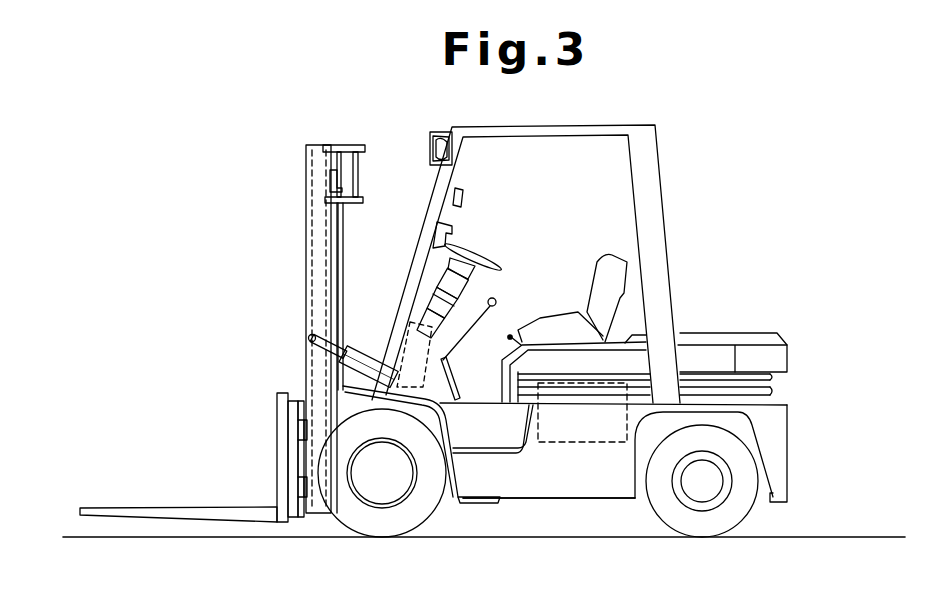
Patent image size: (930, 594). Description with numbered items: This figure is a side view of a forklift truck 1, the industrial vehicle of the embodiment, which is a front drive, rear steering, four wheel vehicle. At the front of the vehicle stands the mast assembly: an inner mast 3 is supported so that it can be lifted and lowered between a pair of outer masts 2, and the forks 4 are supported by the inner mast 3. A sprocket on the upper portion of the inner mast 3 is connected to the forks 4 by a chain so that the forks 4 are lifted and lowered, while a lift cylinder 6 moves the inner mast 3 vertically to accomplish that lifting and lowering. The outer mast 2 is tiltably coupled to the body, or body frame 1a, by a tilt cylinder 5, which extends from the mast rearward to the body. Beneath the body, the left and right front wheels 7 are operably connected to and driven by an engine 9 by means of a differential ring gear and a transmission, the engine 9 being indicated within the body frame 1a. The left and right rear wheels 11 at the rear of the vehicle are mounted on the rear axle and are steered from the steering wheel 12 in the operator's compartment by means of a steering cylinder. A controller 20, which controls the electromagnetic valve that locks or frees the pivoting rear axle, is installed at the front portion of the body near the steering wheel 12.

The forklift truck 1 is at (718, 146).
The body frame 1a is at (563, 490).
The outer mast 2 is at (305, 179).
The inner mast 3 is at (303, 145).
The forks 4 is at (150, 510).
The tilt cylinder 5 is at (373, 355).
The lift cylinder 6 is at (343, 218).
The front wheels 7 is at (424, 507).
The engine 9 is at (607, 443).
The rear wheels 11 is at (738, 517).
The steering wheel 12 is at (496, 269).
The controller 20 is at (410, 320).